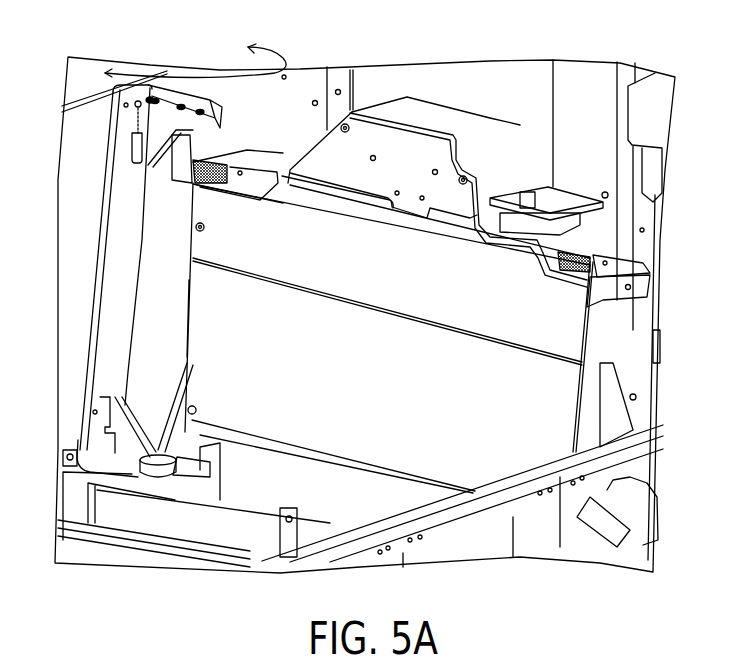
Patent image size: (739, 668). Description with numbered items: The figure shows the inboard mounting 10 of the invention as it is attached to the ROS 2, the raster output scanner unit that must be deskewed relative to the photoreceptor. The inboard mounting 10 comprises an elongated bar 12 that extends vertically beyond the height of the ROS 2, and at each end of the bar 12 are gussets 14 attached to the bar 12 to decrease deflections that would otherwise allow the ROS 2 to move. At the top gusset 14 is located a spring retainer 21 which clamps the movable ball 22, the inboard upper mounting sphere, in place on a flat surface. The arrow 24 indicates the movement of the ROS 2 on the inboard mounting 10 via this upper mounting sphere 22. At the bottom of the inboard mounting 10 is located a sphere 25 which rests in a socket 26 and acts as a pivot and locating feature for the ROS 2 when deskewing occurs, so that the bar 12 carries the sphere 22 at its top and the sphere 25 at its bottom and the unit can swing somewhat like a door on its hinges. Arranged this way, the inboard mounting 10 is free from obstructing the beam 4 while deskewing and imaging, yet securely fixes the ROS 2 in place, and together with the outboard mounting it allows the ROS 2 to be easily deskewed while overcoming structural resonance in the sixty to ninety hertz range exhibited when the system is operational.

The ROS 2 is at (570, 337).
The beam 4 is at (337, 483).
The inboard mounting 10 is at (103, 243).
The elongated bar 12 is at (123, 212).
The gussets 14 is at (147, 133).
The spring retainer 21 is at (190, 100).
The movable ball 22 is at (200, 127).
The arrow 24 is at (123, 72).
The sphere 25 is at (173, 468).
The socket 26 is at (200, 478).